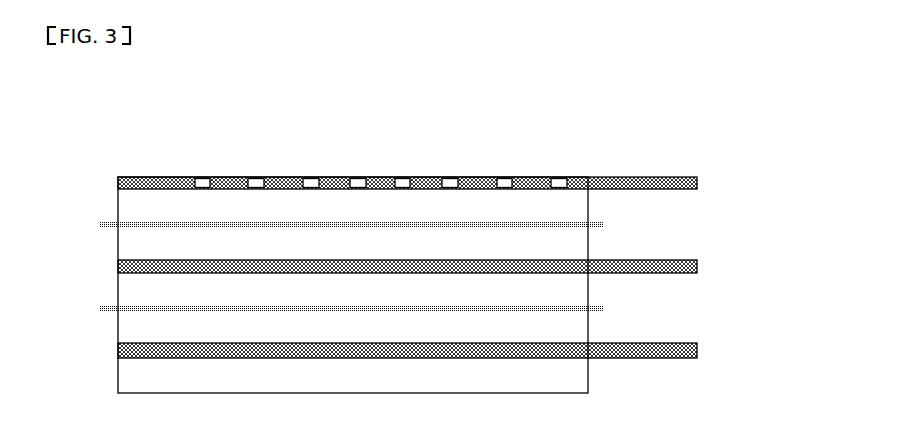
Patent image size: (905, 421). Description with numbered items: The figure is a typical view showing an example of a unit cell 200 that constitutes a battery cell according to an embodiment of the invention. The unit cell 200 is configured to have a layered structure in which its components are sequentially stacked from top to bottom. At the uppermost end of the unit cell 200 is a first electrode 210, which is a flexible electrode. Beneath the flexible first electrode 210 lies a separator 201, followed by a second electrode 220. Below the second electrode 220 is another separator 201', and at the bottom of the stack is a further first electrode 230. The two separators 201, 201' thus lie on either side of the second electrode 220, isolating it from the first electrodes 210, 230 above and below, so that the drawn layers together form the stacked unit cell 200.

The unit cell 200 is at (190, 138).
The first electrode 210 is at (102, 178).
The second electrode 220 is at (102, 228).
The first electrode 230 is at (103, 313).
The separator 201 is at (426, 221).
The separator 201' is at (426, 306).